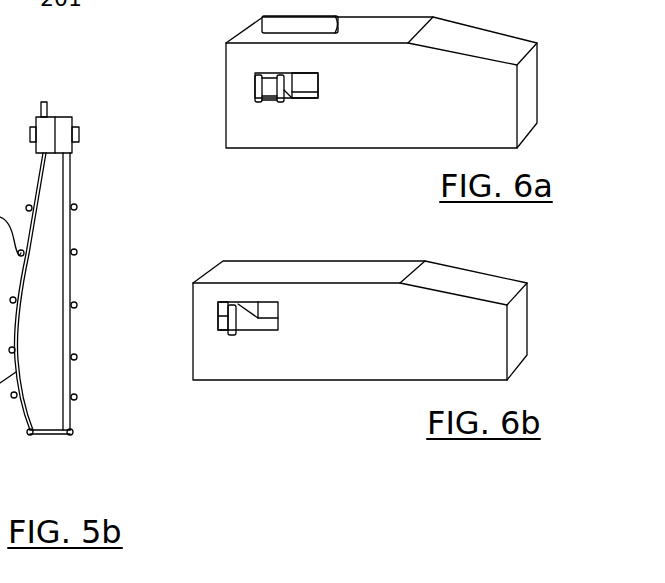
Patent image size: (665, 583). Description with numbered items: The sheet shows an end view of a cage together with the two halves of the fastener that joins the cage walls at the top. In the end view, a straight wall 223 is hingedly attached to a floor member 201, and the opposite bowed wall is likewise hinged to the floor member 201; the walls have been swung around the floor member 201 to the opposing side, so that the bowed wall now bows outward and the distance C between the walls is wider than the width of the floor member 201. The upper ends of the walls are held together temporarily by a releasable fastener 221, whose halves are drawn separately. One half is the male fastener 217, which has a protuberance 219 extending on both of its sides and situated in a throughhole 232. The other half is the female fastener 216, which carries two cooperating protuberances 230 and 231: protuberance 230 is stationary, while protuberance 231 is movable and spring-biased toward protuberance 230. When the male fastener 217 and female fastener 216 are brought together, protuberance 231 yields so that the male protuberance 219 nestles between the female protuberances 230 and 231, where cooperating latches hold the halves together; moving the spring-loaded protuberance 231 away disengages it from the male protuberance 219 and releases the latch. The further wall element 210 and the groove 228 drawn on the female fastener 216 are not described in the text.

In FIG. 5b, the floor member 201 is at (52, 436).
In FIG. 5b, the probe arm 210 is at (74, 310).
In FIG. 5b, the releasable fastener 221 is at (66, 104).
In FIG. 5b, the straight wall 223 is at (75, 375).
In FIG. 5b, the distance C is at (24, 318).
In FIG. 6a, the female fastener 216 is at (396, 128).
In FIG. 6a, the groove 228 is at (303, 24).
In FIG. 6a, the protuberance 230 is at (254, 90).
In FIG. 6a, the protuberance 231 is at (293, 101).
In FIG. 6b, the male fastener 217 is at (410, 363).
In FIG. 6b, the protuberance 219 is at (230, 331).
In FIG. 6b, the throughhole 232 is at (268, 327).